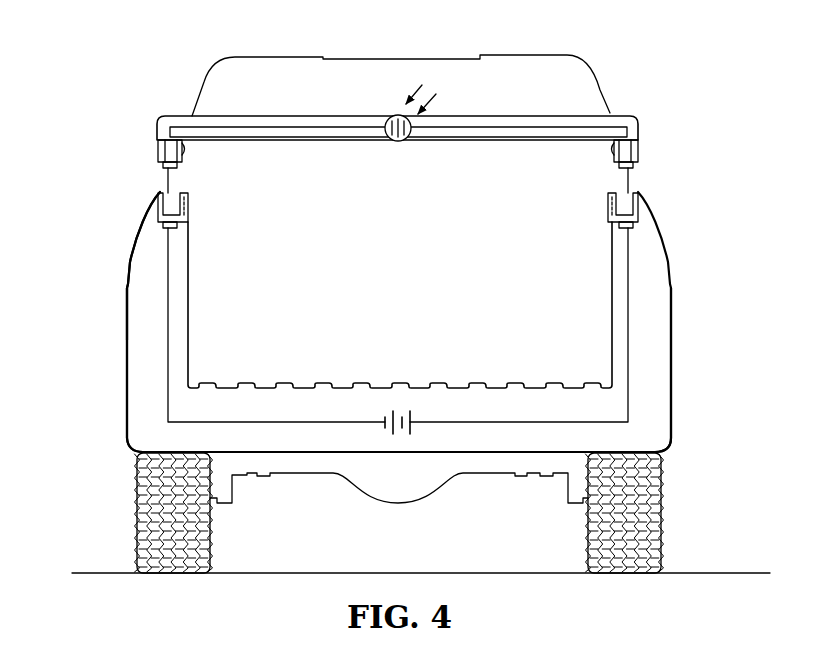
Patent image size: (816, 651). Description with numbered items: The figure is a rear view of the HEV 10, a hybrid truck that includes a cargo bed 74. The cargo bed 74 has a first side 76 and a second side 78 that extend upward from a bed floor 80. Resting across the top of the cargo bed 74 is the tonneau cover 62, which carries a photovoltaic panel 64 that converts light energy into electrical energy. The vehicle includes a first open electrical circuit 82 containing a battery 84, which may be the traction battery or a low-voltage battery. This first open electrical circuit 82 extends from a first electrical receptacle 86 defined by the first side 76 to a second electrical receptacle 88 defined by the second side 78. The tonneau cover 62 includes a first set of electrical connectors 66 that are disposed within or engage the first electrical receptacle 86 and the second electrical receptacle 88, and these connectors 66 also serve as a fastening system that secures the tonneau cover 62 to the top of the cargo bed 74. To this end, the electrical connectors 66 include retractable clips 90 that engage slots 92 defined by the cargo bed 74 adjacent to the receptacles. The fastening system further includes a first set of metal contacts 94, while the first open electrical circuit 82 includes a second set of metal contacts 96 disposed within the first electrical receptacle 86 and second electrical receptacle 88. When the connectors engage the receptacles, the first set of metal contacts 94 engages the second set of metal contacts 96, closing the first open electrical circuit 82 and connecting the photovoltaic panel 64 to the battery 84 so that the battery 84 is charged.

The HEV 10 is at (175, 58).
The tonneau cover 62 is at (552, 113).
The photovoltaic panel 64 is at (396, 114).
The first set of electrical connectors 66 is at (158, 148).
The cargo bed 74 is at (134, 227).
The first side 76 is at (128, 340).
The second side 78 is at (671, 340).
The bed floor 80 is at (323, 452).
The first open electrical circuit 82 is at (632, 370).
The battery 84 is at (413, 420).
The first electrical receptacle 86 is at (168, 192).
The second electrical receptacle 88 is at (632, 192).
The retractable clips 90 is at (186, 147).
The slots 92 is at (190, 203).
The first set of metal contacts 94 is at (173, 168).
The second set of metal contacts 96 is at (172, 228).